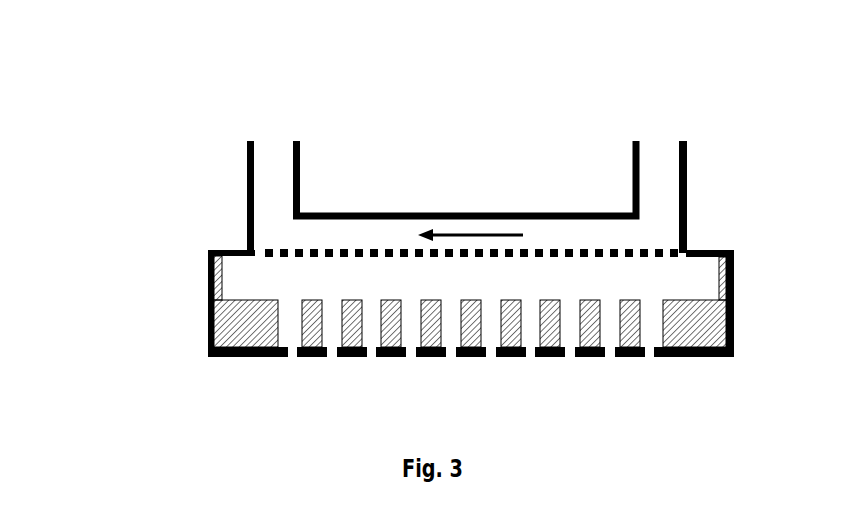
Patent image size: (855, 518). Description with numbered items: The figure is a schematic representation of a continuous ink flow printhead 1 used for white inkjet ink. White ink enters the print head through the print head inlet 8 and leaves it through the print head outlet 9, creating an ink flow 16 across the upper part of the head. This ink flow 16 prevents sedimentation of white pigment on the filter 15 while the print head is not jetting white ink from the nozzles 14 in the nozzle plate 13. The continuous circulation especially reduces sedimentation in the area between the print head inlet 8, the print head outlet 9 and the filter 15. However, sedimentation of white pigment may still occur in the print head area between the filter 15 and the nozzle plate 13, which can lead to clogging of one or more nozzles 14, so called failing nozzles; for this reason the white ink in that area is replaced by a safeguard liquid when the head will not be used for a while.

The continuous ink flow printhead 1 is at (202, 207).
The print head inlet 8 is at (655, 150).
The print head outlet 9 is at (268, 158).
The nozzle plate 13 is at (248, 357).
The nozzles 14 is at (335, 347).
The filter 15 is at (650, 250).
The ink flow 16 is at (477, 240).